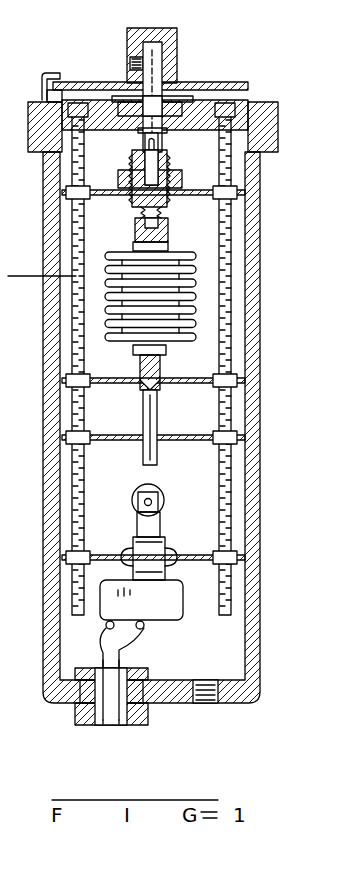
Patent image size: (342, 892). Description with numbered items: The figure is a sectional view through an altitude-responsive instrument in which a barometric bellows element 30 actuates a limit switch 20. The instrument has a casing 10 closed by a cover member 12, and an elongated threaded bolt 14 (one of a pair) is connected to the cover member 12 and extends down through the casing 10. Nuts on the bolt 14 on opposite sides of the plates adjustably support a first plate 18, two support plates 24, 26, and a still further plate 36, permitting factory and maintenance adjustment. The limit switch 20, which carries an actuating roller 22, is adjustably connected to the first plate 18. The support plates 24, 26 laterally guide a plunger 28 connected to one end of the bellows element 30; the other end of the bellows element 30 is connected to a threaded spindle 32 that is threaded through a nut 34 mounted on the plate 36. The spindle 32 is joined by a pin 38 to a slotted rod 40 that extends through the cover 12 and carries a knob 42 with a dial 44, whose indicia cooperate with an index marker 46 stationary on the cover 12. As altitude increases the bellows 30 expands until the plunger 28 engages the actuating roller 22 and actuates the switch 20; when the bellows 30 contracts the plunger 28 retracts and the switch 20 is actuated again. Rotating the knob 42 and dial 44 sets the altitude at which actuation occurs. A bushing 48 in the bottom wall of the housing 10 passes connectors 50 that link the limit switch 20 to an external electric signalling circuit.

The casing 10 is at (258, 346).
The cover member 12 is at (280, 135).
The elongated threaded bolt 14 is at (233, 288).
The first plate 18 is at (192, 555).
The limit switch 20 is at (170, 622).
The actuating roller 22 is at (160, 494).
The support plate 24 is at (182, 435).
The support plate 26 is at (240, 381).
The plunger 28 is at (142, 414).
The bellows element 30 is at (196, 328).
The threaded spindle 32 is at (166, 206).
The nut 34 is at (169, 176).
The plate 36 is at (240, 193).
The pin 38 is at (145, 151).
The slotted rod 40 is at (162, 62).
The knob 42 is at (177, 40).
The dial 44 is at (95, 82).
The index marker 46 is at (47, 75).
The bushing 48 is at (132, 725).
The connectors 50 is at (105, 725).